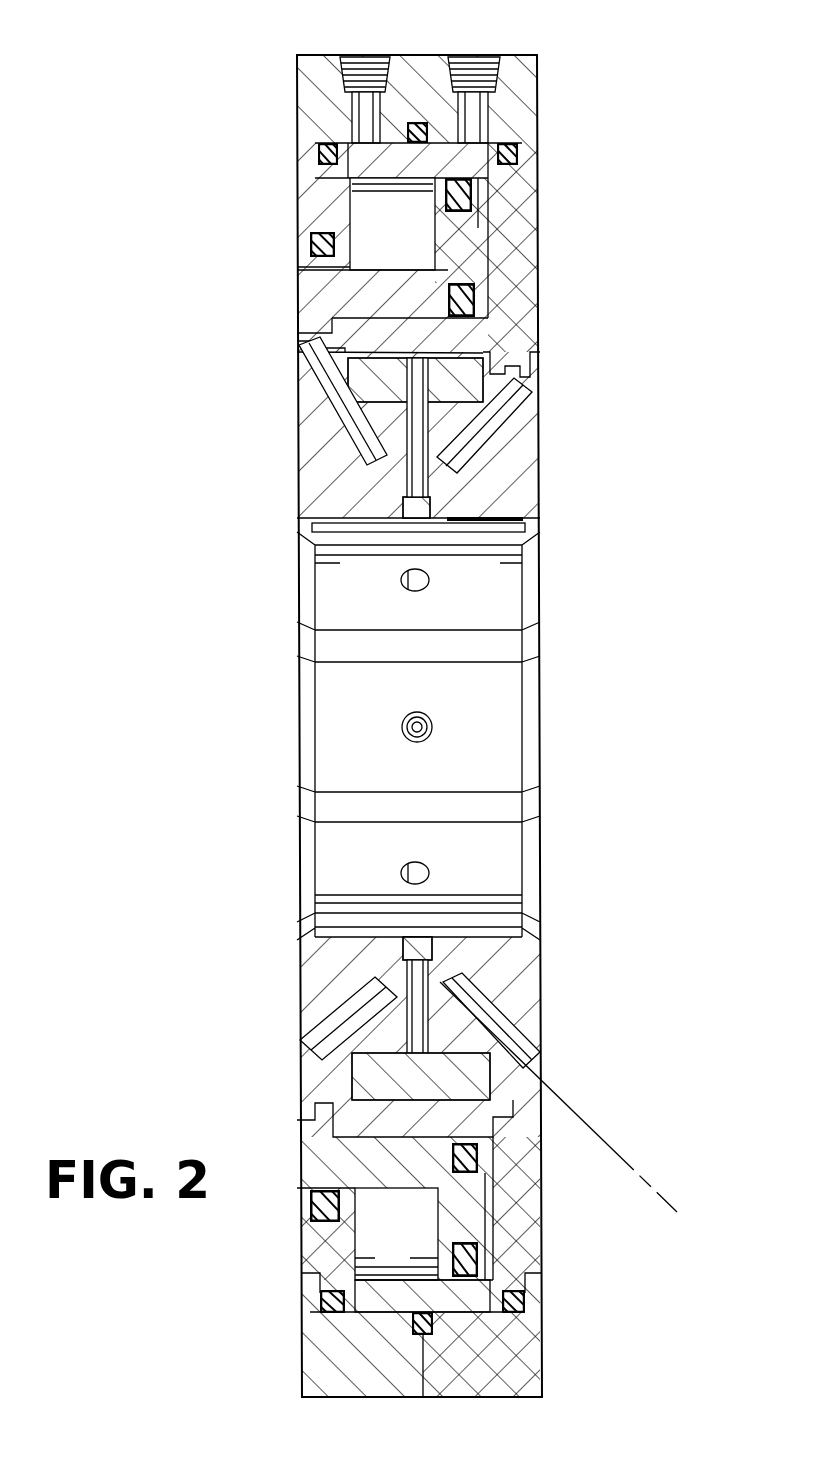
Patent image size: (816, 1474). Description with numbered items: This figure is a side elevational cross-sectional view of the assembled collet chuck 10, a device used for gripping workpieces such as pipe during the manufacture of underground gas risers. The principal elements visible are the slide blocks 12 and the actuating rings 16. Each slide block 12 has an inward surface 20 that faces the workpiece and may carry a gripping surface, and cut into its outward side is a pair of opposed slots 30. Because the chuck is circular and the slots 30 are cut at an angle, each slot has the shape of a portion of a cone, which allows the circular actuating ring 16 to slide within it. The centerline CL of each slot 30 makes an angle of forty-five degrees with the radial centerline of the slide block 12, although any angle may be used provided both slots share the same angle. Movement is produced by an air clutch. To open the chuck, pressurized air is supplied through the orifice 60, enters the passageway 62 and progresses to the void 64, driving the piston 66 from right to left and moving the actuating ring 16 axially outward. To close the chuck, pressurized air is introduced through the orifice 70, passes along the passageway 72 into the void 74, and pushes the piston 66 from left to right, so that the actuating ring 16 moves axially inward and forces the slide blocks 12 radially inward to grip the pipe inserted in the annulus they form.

The collet chuck 10 is at (585, 400).
The slide block 12 is at (500, 468).
The actuating ring 16 is at (345, 430).
The inward surface 20 is at (500, 590).
The slot 30 is at (335, 1035).
The orifice 60 is at (470, 55).
The passageway 62 is at (480, 173).
The void 64 is at (490, 215).
The piston 66 is at (470, 262).
The orifice 70 is at (358, 55).
The passageway 72 is at (340, 183).
The void 74 is at (375, 255).
The centerline of slot CL is at (575, 1112).